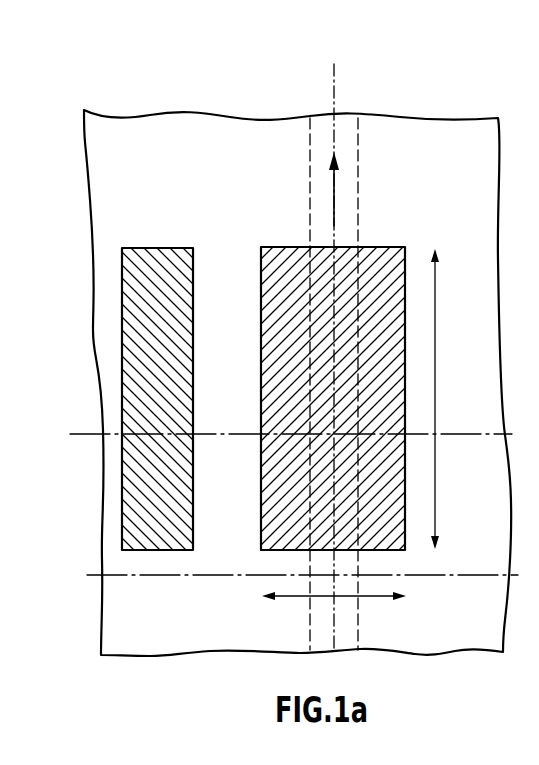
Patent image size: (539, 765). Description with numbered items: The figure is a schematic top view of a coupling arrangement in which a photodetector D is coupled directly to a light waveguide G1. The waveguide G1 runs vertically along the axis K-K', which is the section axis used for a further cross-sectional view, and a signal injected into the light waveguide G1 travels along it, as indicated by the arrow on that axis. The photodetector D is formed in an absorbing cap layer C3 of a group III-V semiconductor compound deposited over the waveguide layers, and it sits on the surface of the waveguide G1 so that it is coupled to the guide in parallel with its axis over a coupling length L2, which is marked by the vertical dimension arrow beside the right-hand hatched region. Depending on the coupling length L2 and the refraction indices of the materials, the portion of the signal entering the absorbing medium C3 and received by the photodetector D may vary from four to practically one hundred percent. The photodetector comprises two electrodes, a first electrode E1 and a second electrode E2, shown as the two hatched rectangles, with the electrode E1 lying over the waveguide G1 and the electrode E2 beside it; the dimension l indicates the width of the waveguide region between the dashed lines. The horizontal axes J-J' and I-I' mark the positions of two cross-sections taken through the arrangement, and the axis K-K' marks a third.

The electrode E1 is at (384, 258).
The electrode E2 is at (138, 352).
The photodetector D is at (412, 249).
The light waveguide G1 is at (345, 130).
The axis K-K' end point K is at (334, 341).
The axis K-K' end point K' is at (346, 635).
The coupling length L2 is at (448, 399).
The gap width l is at (334, 610).
The axis J-J' end point J is at (293, 453).
The axis J-J' end point J' is at (79, 455).
The axis I-I' end point I is at (302, 596).
The axis I-I' end point I' is at (81, 600).
The cap layer C3 is at (342, 528).